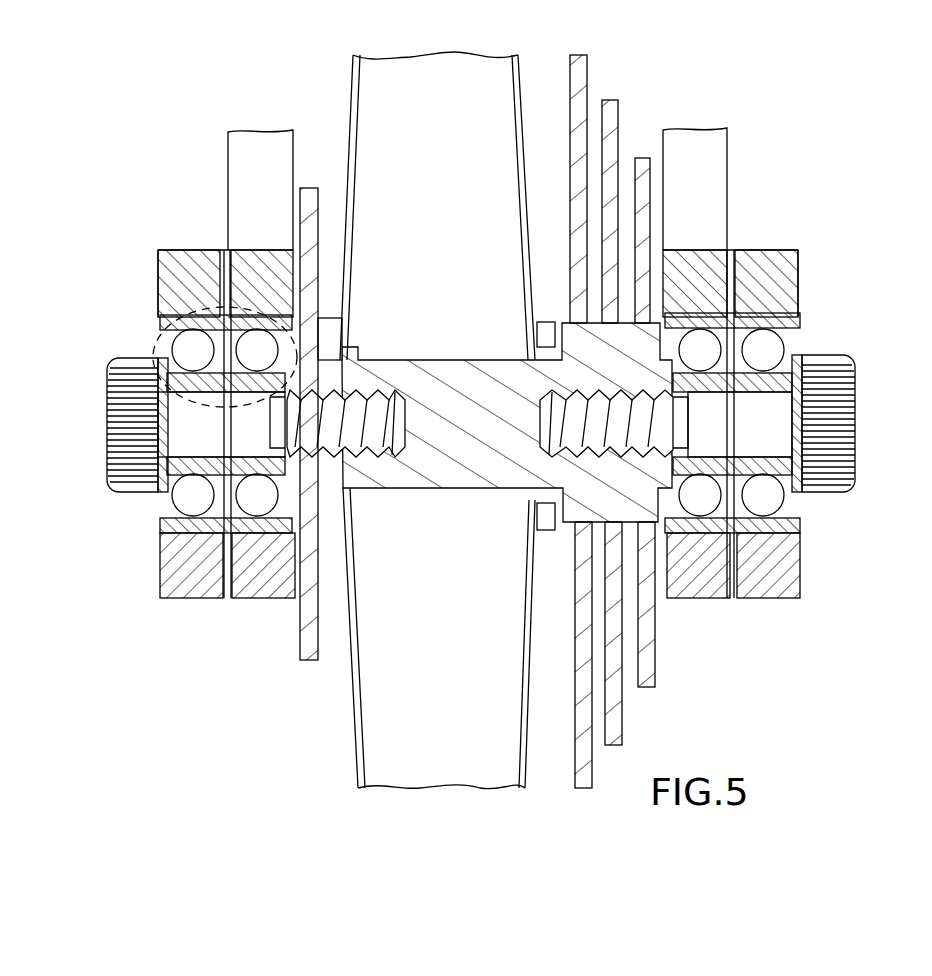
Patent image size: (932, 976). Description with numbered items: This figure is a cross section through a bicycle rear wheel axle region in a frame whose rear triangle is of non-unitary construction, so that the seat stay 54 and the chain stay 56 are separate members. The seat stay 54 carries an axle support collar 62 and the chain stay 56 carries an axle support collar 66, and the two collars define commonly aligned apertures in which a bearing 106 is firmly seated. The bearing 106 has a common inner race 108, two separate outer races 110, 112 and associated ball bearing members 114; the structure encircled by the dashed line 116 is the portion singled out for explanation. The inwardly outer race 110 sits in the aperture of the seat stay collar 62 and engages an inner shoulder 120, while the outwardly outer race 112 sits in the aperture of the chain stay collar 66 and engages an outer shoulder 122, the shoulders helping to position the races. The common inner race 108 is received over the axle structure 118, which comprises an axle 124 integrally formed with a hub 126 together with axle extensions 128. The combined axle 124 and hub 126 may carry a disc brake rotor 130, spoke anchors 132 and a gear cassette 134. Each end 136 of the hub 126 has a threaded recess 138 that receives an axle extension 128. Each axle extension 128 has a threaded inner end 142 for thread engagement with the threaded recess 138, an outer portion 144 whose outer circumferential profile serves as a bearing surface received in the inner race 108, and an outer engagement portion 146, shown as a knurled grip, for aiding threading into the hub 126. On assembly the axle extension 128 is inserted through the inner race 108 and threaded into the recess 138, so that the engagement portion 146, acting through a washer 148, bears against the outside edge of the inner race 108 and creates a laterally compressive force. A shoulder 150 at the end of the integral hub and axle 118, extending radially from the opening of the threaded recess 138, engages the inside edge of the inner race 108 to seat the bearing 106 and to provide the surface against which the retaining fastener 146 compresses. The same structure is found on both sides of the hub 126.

The seat stay 54 is at (728, 170).
The chain stay 56 is at (148, 303).
The axle support collar 62 is at (243, 265).
The axle support collar 66 is at (160, 276).
The bearing 106 is at (152, 522).
The common inner race 108 is at (198, 468).
The outer race 110 is at (265, 585).
The outer race 112 is at (205, 585).
The ball bearing members 114 is at (775, 504).
The dashed line 116 is at (163, 345).
The axle structure 118 is at (416, 500).
The inner shoulder 120 is at (338, 540).
The outer shoulder 122 is at (166, 552).
The axle 124 is at (488, 397).
The hub 126 is at (382, 365).
The axle extension 128 is at (165, 404).
The disc brake rotor 130 is at (313, 190).
The spoke anchors 132 is at (352, 345).
The gear cassette 134 is at (632, 123).
The end 136 is at (640, 365).
The threaded recess 138 is at (397, 400).
The threaded inner end 142 is at (365, 412).
The outer portion 144 is at (203, 430).
The engagement portion 146 is at (155, 411).
The washer 148 is at (160, 497).
The shoulder 150 is at (318, 482).